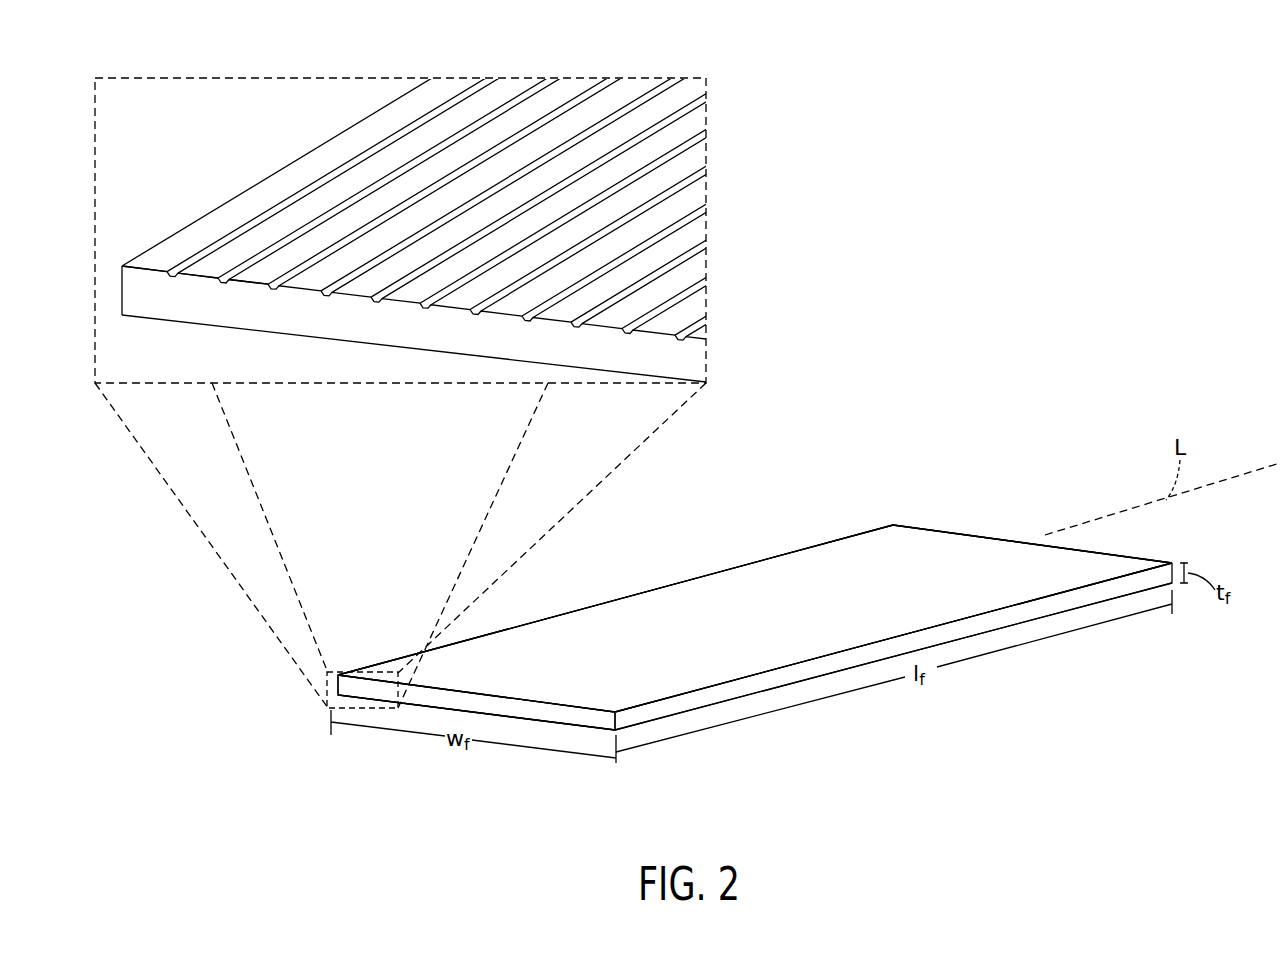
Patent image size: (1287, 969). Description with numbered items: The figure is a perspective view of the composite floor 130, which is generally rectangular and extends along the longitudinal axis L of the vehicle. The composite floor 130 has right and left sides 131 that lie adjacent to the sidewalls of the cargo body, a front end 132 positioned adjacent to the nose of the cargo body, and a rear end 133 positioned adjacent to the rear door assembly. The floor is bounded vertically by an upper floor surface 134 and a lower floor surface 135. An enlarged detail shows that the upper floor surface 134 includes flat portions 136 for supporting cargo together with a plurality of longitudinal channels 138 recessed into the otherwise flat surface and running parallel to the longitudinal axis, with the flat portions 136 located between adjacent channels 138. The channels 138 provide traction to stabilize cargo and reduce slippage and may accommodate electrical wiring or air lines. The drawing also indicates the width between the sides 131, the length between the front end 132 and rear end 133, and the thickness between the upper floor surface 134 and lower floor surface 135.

The composite floor 130 is at (919, 412).
The right and left sides 131 is at (750, 675).
The front end 132 is at (550, 713).
The rear end 133 is at (990, 537).
The upper floor surface 134 is at (800, 567).
The lower floor surface 135 is at (792, 687).
The flat portions 136 is at (227, 252).
The longitudinal channels 138 is at (222, 278).